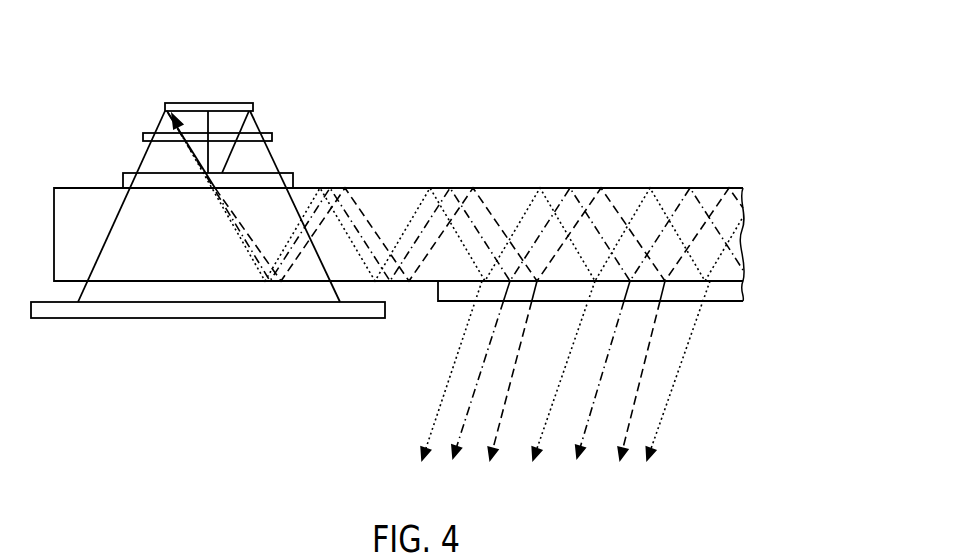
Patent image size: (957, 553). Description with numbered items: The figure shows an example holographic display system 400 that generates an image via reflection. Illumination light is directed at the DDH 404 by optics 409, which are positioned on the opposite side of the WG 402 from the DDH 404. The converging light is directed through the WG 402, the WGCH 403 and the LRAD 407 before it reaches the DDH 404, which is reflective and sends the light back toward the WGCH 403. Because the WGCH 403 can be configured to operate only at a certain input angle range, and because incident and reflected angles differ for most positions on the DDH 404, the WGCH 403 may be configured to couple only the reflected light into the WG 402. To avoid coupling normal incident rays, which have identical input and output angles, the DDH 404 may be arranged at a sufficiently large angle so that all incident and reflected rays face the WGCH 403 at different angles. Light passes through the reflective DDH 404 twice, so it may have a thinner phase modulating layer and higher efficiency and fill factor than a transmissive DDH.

The holographic display system 400 is at (708, 47).
The WG 402 is at (54, 248).
The WGCH 403 is at (293, 173).
The DDH 404 is at (253, 105).
The LRAD 407 is at (272, 133).
The optics 409 is at (55, 318).